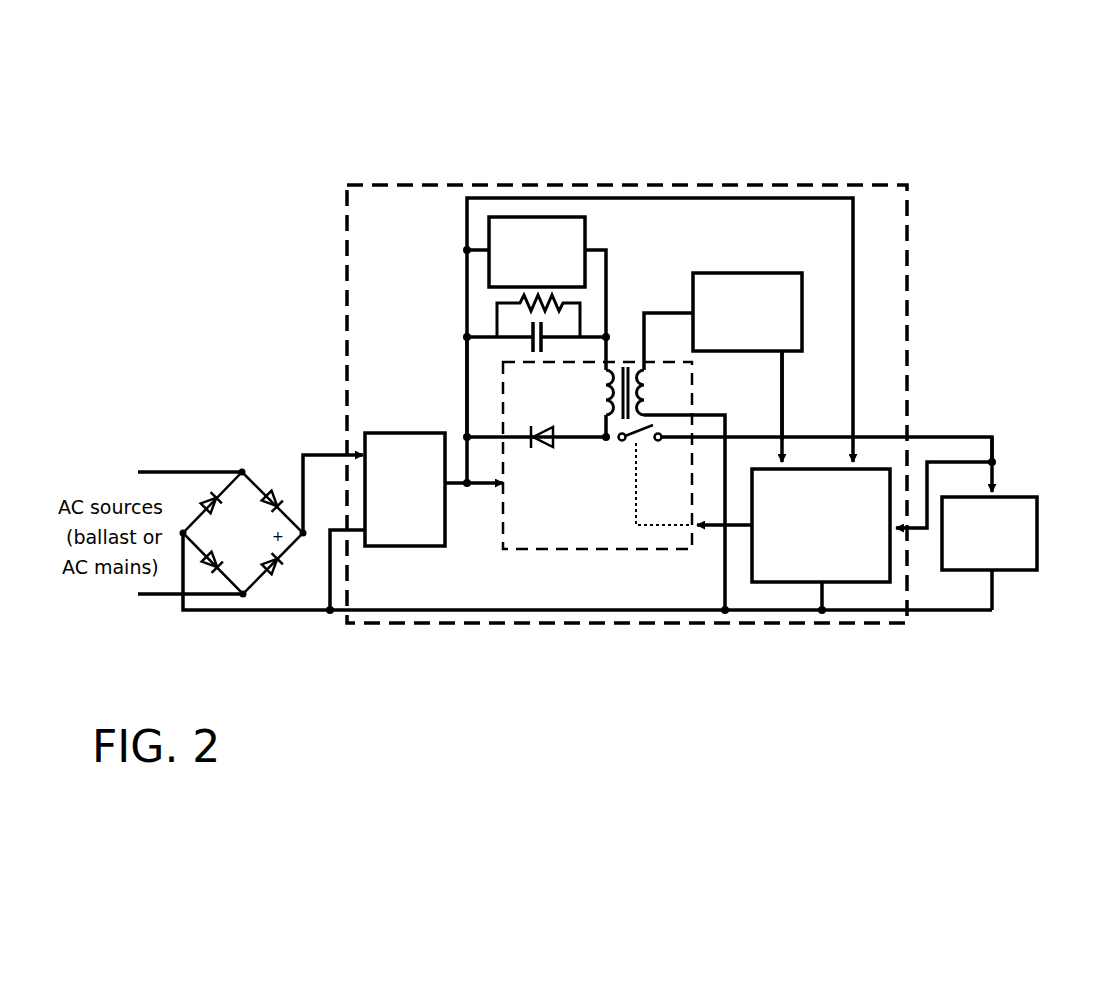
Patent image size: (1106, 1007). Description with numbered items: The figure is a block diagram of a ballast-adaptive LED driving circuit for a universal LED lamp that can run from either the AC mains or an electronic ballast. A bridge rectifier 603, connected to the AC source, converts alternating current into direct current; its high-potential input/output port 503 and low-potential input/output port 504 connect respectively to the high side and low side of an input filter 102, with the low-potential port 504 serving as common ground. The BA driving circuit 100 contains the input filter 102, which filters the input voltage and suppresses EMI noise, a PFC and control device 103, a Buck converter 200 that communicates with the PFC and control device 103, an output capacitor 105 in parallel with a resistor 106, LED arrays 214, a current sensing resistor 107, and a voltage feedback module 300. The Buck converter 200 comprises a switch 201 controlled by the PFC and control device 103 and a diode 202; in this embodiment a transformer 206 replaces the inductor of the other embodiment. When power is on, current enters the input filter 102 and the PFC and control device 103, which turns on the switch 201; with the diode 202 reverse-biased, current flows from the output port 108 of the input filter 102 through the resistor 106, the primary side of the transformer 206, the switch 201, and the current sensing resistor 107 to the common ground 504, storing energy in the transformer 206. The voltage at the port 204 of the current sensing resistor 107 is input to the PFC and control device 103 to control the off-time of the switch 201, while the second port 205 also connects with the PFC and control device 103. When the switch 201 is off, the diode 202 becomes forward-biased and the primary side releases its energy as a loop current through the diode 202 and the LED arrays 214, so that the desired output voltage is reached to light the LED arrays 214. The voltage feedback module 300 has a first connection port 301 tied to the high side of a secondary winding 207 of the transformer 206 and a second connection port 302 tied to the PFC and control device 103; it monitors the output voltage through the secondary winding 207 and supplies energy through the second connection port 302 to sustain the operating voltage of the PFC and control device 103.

The BA driving circuit 100 is at (564, 176).
The input filter 102 is at (397, 432).
The PFC and control device 103 is at (882, 468).
The output capacitor 105 is at (513, 330).
The resistor 106 is at (563, 345).
The current sensing resistor 107 is at (1007, 572).
The output port 108 is at (464, 434).
The Buck converter 200 is at (664, 561).
The switch 201 is at (624, 443).
The diode 202 is at (545, 447).
The port of the current sensing resistor 204 is at (995, 458).
The second port of the current sensing resistor 205 is at (970, 614).
The transformer 206 is at (628, 366).
The secondary winding 207 is at (640, 392).
The LED arrays 214 is at (505, 216).
The voltage feedback module 300 is at (752, 272).
The first connection port 301 is at (646, 380).
The second connection port 302 is at (790, 385).
The input/output port 503 is at (318, 452).
The input/output port 504 is at (300, 612).
The bridge rectifier 603 is at (232, 455).